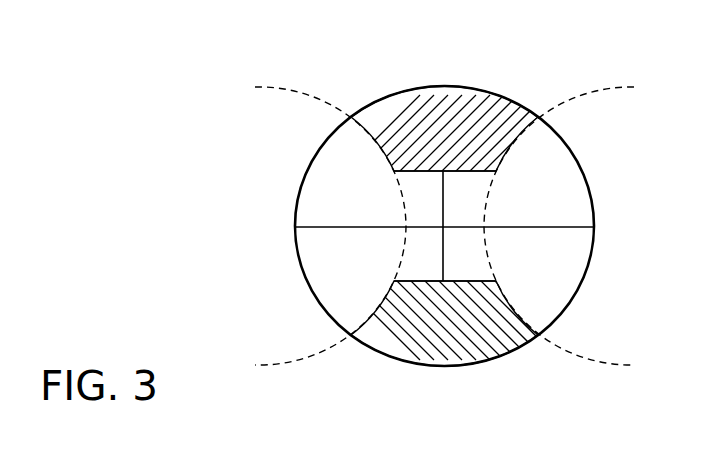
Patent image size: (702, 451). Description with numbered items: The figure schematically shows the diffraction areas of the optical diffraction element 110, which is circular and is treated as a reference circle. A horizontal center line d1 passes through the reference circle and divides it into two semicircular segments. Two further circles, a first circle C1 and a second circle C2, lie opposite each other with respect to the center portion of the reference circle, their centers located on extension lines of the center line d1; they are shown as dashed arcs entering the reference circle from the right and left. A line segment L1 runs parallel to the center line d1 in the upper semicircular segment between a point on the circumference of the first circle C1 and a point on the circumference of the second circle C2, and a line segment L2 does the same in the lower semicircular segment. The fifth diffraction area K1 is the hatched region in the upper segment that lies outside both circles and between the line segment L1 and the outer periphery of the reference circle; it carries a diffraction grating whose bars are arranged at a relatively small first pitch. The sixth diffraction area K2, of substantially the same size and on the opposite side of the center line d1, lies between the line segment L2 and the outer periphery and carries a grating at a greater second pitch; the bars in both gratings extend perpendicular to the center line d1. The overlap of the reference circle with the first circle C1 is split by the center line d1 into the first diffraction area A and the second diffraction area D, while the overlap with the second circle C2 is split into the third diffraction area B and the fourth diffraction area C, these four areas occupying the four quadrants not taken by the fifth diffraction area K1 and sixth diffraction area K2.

The optical diffraction element 110 is at (517, 98).
The center line d1 is at (576, 227).
The fifth diffraction area K1 is at (466, 135).
The sixth diffraction area K2 is at (473, 318).
The line segment L1 is at (485, 174).
The line segment L2 is at (485, 279).
The first circle C1 is at (582, 358).
The second circle C2 is at (307, 357).
The first diffraction area A is at (536, 187).
The third diffraction area B is at (346, 187).
The fourth diffraction area C is at (348, 269).
The second diffraction area D is at (539, 269).